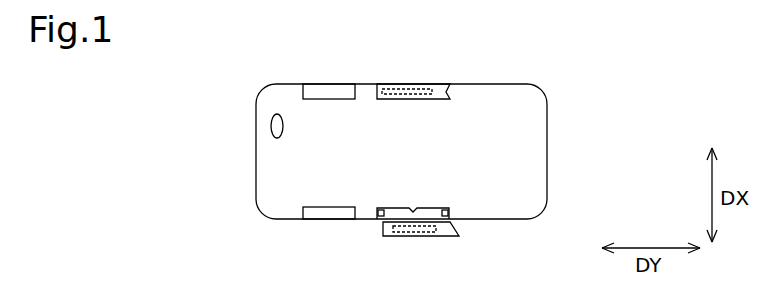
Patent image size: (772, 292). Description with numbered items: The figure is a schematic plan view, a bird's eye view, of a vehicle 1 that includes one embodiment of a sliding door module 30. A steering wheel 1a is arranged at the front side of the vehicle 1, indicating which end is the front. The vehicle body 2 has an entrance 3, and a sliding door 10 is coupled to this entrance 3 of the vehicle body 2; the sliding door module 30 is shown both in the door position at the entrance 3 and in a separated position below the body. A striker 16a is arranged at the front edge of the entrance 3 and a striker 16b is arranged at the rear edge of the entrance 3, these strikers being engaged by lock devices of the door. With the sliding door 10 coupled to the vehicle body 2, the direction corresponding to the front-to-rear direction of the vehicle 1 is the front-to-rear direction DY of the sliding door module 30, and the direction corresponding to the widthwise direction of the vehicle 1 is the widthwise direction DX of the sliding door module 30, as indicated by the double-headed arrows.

The vehicle 1 is at (607, 63).
The steering wheel 1a is at (271, 123).
The vehicle body 2 is at (499, 84).
The entrance 3 is at (413, 209).
The sliding door 10 is at (437, 84).
The sliding door module 30 is at (410, 86).
The striker 16a is at (380, 210).
The striker 16b is at (445, 210).